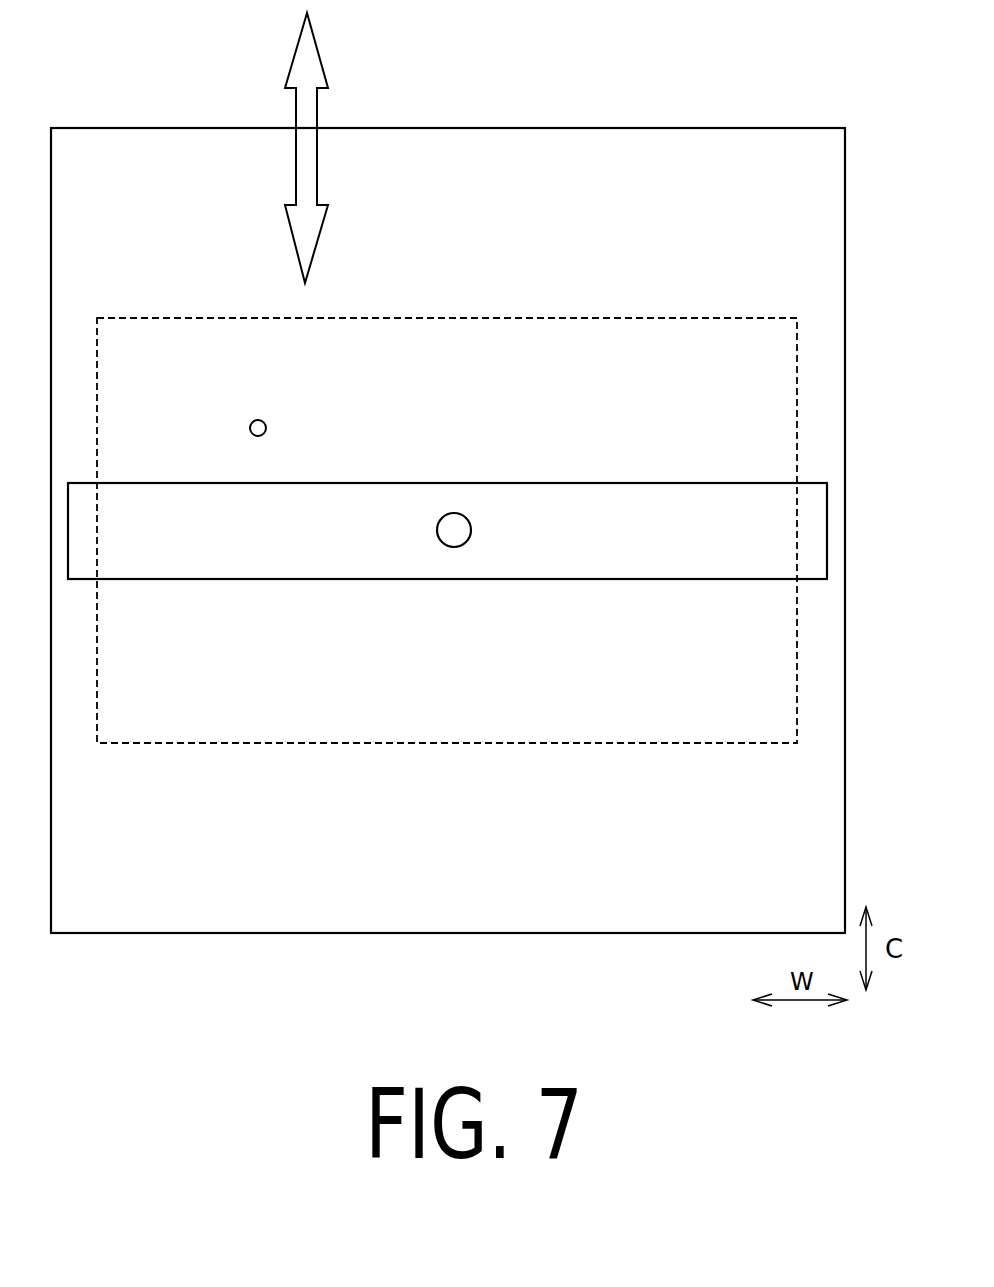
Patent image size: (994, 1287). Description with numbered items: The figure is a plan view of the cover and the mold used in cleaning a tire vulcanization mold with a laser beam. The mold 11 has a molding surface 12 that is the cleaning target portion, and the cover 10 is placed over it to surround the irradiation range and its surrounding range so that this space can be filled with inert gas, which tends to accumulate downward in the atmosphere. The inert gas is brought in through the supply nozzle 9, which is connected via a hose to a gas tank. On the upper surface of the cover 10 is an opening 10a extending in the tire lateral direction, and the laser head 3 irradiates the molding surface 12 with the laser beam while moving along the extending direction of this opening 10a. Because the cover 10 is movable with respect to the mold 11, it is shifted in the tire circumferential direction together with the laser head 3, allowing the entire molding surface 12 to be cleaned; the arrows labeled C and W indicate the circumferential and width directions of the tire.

The cover 10 is at (562, 150).
The tire vulcanization mold 11 is at (581, 326).
The opening 10a is at (580, 483).
The molding surface 12 is at (310, 555).
The laser head 3 is at (460, 523).
The supply nozzle 9 is at (266, 426).